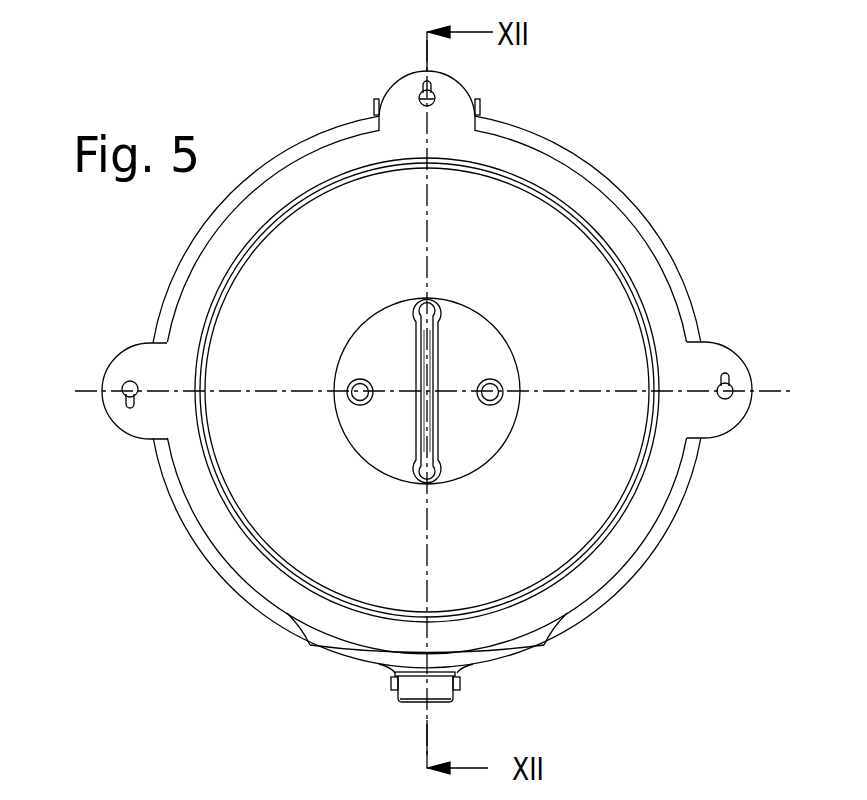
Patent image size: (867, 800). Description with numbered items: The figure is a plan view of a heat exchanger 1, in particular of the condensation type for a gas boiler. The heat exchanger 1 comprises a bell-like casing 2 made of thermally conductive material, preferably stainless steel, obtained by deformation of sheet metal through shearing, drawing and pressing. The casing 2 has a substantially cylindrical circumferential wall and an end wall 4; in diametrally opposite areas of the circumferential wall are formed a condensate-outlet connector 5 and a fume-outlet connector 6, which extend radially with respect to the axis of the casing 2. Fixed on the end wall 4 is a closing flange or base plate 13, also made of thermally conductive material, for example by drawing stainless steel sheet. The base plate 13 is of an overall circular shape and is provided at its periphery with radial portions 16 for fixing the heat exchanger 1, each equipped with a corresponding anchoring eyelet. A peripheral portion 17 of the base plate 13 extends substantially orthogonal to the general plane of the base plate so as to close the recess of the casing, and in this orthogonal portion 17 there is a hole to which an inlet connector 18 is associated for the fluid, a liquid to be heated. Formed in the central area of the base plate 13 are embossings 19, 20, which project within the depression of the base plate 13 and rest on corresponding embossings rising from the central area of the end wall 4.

The heat exchanger 1 is at (649, 168).
The bell-like casing 2 is at (688, 278).
The end wall 4 is at (280, 160).
The condensate-outlet connector 5 is at (391, 685).
The fume-outlet connector 6 is at (378, 110).
The base plate 13 is at (615, 575).
The radial portions 16 is at (725, 357).
The peripheral portion 17 is at (508, 657).
The inlet connector 18 is at (441, 694).
The embossing 19 is at (357, 376).
The embossing 20 is at (435, 346).